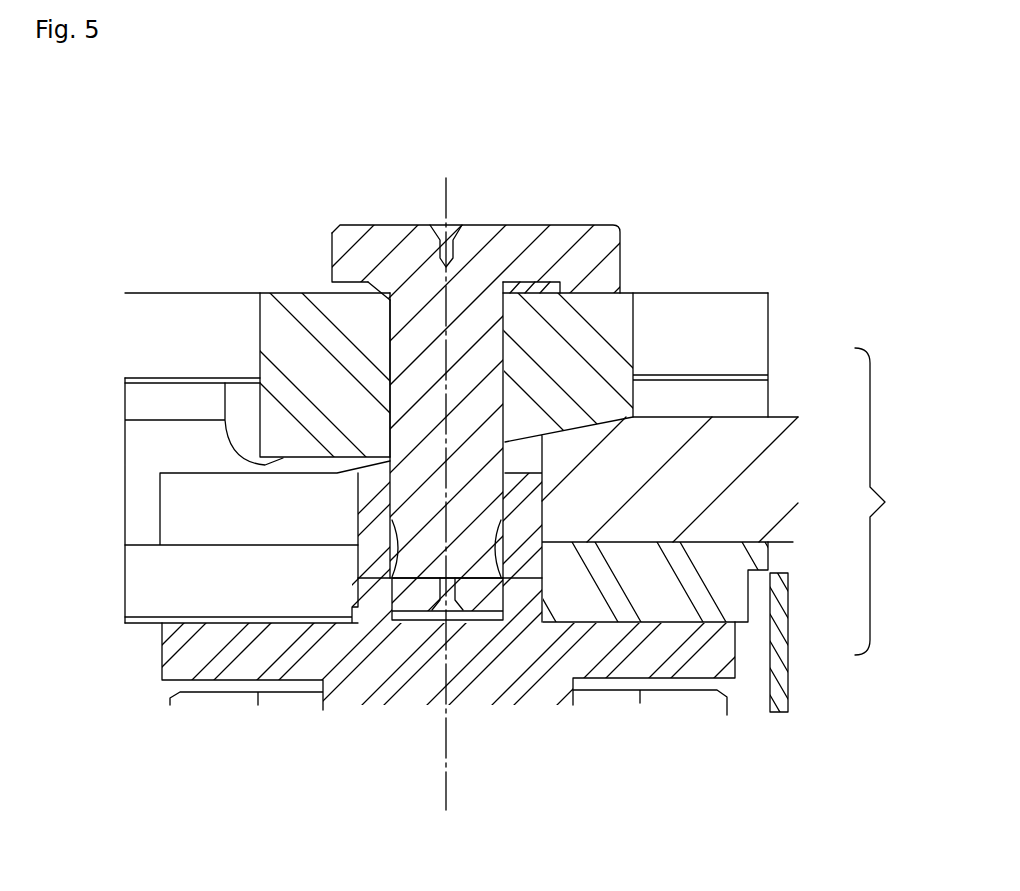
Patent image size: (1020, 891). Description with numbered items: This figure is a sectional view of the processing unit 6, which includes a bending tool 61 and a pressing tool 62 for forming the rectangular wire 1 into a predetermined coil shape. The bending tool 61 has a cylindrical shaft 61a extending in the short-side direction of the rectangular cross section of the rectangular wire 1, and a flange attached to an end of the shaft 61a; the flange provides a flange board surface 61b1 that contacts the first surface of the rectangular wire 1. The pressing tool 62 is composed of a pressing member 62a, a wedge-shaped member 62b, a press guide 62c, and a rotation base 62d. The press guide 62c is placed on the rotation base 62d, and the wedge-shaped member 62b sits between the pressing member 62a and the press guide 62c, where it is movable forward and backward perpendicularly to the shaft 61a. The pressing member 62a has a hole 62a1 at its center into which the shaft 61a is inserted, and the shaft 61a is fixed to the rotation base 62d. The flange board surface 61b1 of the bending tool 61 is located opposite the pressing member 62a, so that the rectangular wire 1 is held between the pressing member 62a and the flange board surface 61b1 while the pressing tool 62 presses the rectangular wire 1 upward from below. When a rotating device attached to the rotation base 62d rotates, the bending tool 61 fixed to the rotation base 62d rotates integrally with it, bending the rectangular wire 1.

The rectangular wire 1 is at (532, 285).
The processing unit 6 is at (407, 881).
The bending tool 61 is at (421, 226).
The shaft 61a is at (420, 403).
The flange board surface 61b1 is at (372, 298).
The pressing tool 62 is at (918, 512).
The pressing member 62a is at (570, 365).
The hole 62a1 is at (397, 348).
The wedge-shaped member 62b is at (710, 468).
The press guide 62c is at (653, 590).
The rotation base 62d is at (590, 663).